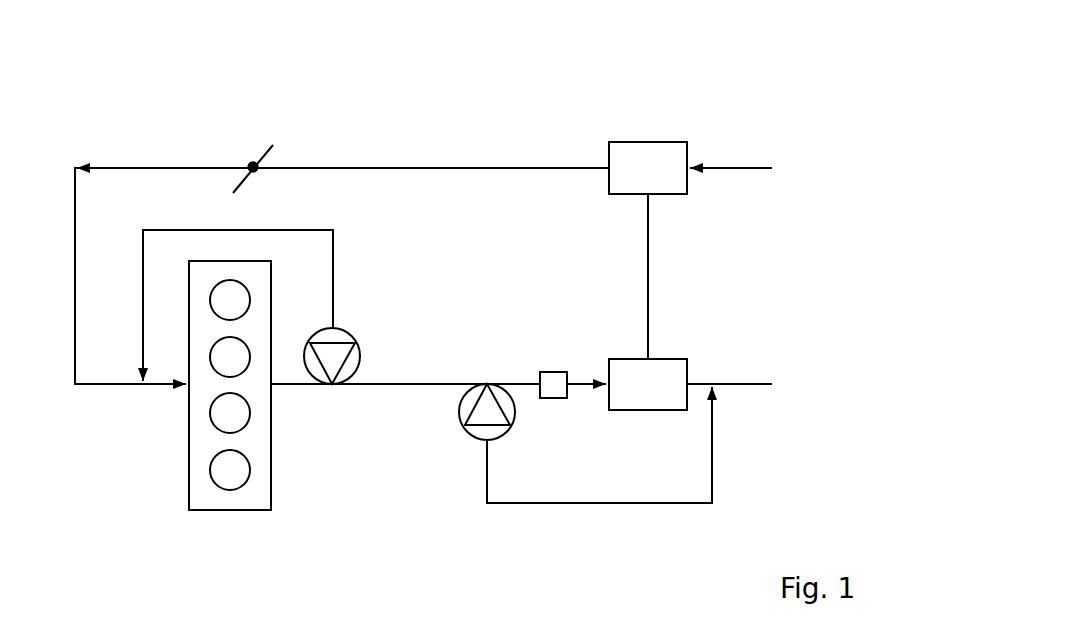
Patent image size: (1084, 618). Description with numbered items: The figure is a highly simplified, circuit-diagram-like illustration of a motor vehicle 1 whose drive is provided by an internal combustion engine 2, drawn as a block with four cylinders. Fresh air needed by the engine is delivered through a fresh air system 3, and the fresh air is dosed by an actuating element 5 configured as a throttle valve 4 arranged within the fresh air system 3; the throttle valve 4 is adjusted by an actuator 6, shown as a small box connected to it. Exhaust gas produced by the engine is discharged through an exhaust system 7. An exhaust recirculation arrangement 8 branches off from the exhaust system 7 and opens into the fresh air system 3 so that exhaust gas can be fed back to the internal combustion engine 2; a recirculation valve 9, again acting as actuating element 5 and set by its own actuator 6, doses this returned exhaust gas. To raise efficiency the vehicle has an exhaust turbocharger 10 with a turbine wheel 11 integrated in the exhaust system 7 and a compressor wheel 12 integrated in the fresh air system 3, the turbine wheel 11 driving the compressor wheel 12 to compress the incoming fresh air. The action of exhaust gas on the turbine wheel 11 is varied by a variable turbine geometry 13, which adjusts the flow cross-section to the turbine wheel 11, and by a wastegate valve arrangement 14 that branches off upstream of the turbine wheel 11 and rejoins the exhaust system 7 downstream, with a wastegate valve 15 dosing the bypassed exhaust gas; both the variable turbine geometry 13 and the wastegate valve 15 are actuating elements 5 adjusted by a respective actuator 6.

The motor vehicle 1 is at (814, 137).
The internal combustion engine 2 is at (187, 447).
The fresh air system 3 is at (142, 148).
The throttle valve 4 is at (246, 182).
The actuating element 5 is at (417, 318).
The actuator 6 is at (253, 162).
The exhaust system 7 is at (747, 372).
The exhaust recirculation arrangement 8 is at (343, 244).
The recirculation valve 9 is at (341, 332).
The exhaust turbocharger 10 is at (593, 140).
The turbine wheel 11 is at (635, 396).
The compressor wheel 12 is at (635, 181).
The variable turbine geometry 13 is at (553, 399).
The wastegate valve arrangement 14 is at (600, 508).
The wastegate valve 15 is at (467, 437).